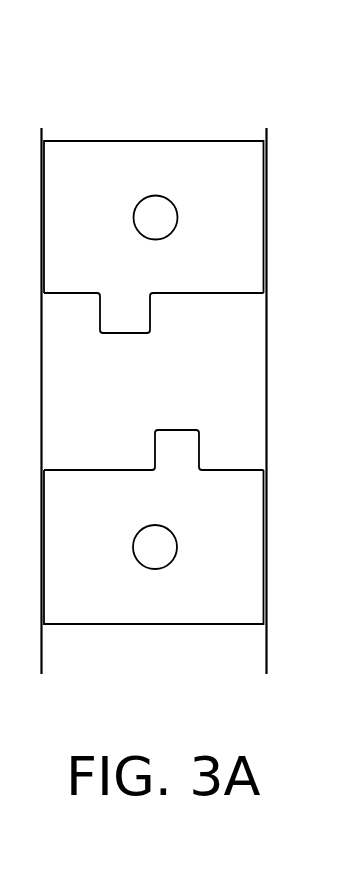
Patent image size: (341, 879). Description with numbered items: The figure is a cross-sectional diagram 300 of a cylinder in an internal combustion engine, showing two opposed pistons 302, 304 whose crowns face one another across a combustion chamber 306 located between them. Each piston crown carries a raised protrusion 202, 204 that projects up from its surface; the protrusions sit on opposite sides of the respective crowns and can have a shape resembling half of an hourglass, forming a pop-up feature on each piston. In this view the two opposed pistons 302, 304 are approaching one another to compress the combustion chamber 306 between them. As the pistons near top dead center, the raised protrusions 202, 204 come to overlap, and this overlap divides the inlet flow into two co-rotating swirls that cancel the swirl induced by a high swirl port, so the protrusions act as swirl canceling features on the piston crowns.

The cross-sectional diagram 300 is at (132, 91).
The opposed piston 302 is at (237, 208).
The opposed piston 304 is at (115, 603).
The combustion chamber 306 is at (232, 388).
The raised protrusion 202 is at (149, 312).
The raised protrusion 204 is at (183, 447).